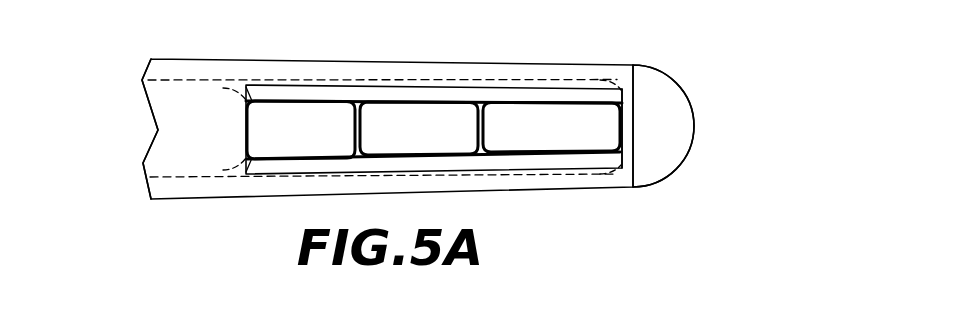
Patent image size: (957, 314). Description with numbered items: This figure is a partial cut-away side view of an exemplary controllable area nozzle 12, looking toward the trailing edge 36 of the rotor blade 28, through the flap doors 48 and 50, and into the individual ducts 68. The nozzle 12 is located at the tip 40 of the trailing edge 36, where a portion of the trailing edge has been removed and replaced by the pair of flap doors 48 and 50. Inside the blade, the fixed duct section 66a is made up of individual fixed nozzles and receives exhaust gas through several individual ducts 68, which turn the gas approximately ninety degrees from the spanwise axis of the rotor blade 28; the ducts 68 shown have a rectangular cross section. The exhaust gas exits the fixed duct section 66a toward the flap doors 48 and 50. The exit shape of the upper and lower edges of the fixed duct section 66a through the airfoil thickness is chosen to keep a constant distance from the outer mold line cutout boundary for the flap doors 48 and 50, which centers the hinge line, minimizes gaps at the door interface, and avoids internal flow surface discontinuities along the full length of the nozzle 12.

The rotor blade 28 is at (82, 48).
The trailing edge 36 is at (150, 128).
The tip 40 is at (768, 127).
The controllable area nozzle 12 is at (611, 205).
The flap door 48 is at (293, 90).
The flap door 50 is at (302, 165).
The individual ducts 68 is at (318, 125).
The fixed duct section 66a is at (628, 112).